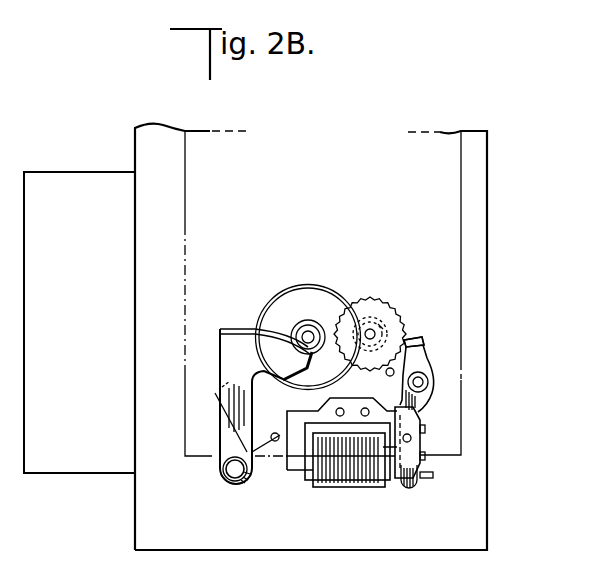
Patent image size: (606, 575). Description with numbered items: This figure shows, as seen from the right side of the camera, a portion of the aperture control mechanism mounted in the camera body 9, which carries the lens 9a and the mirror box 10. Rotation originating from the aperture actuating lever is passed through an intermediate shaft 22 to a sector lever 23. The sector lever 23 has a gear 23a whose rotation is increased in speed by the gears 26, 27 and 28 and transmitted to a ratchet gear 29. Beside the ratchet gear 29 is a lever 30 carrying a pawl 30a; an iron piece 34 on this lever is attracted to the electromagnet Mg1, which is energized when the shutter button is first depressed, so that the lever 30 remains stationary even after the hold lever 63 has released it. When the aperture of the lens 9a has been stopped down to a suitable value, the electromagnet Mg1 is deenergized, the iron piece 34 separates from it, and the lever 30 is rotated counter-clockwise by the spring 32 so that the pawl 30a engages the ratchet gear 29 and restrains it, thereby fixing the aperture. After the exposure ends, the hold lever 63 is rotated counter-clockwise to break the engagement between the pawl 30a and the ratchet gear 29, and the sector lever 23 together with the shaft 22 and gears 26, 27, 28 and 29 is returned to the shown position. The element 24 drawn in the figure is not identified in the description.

The camera body 9 is at (488, 166).
The lens 9a is at (82, 178).
The mirror box 10 is at (462, 207).
The intermediate shaft 22 is at (223, 478).
The sector lever 23 is at (248, 363).
The gear 23a is at (230, 325).
The spring 24 is at (228, 432).
The gear 26 is at (308, 320).
The gear 27 is at (316, 285).
The gear 28 is at (378, 324).
The ratchet gear 29 is at (368, 296).
The lever 30 is at (426, 404).
The pawl 30a is at (417, 340).
The spring 32 is at (385, 383).
The iron piece 34 is at (412, 438).
The hold lever 63 is at (430, 478).
The electromagnet Mg1 is at (342, 482).